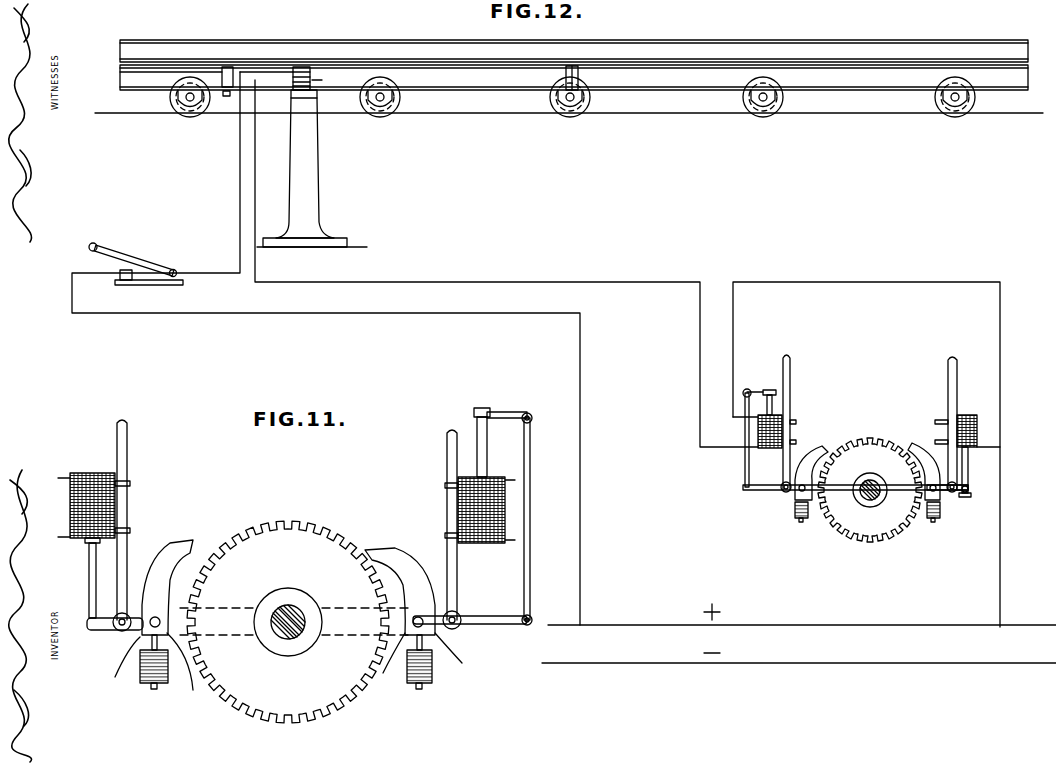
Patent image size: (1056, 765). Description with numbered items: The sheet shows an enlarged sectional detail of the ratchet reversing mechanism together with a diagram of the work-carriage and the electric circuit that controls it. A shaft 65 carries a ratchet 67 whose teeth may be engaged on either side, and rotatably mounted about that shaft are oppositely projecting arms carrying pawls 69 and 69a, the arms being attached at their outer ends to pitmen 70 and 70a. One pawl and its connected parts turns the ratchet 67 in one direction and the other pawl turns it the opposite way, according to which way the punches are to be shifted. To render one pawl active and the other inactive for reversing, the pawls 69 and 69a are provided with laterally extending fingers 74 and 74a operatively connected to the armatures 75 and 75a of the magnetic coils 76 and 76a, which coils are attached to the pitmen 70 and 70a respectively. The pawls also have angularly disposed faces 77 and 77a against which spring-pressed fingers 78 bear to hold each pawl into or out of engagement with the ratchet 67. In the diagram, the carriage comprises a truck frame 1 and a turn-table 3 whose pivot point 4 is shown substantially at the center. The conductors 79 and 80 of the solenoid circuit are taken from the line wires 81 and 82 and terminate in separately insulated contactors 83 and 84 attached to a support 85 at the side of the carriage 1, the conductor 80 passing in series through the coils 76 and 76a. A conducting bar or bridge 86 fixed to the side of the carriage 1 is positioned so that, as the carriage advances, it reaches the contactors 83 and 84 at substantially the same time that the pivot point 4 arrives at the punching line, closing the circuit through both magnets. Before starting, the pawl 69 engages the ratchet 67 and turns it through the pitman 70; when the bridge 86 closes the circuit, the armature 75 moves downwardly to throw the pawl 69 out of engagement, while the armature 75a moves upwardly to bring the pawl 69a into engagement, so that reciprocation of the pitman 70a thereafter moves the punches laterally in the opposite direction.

In FIG. 12, the truck frame 1 is at (647, 75).
In FIG. 12, the turn-table 3 is at (693, 47).
In FIG. 12, the pivot point 4 is at (560, 83).
In FIG. 11, the shaft 65 is at (298, 607).
In FIG. 11, the ratchet 67 is at (313, 707).
In FIG. 11, the pawl 69 is at (400, 563).
In FIG. 11, the pawl 69a is at (185, 541).
In FIG. 11, the pitman 70 is at (447, 452).
In FIG. 11, the pitman 70a is at (127, 438).
In FIG. 11, the laterally extending finger 74 is at (490, 615).
In FIG. 11, the laterally extending finger 74a is at (103, 633).
In FIG. 11, the armature 75 is at (486, 464).
In FIG. 11, the armature 75a is at (89, 580).
In FIG. 11, the magnetic coil 76 is at (507, 497).
In FIG. 11, the magnetic coil 76a is at (70, 497).
In FIG. 11, the angularly disposed face 77 is at (140, 655).
In FIG. 11, the angularly disposed face 77a is at (393, 657).
In FIG. 11, the spring-pressed finger 78 is at (170, 687).
In FIG. 11, the conductor 79 is at (580, 520).
In FIG. 11, the conductor 80 is at (657, 282).
In FIG. 11, the line wire 81 is at (836, 619).
In FIG. 11, the line wire 82 is at (867, 668).
In FIG. 12, the contactor 83 is at (312, 68).
In FIG. 12, the contactor 84 is at (314, 82).
In FIG. 12, the support 85 is at (313, 175).
In FIG. 12, the conducting bar or bridge 86 is at (229, 75).